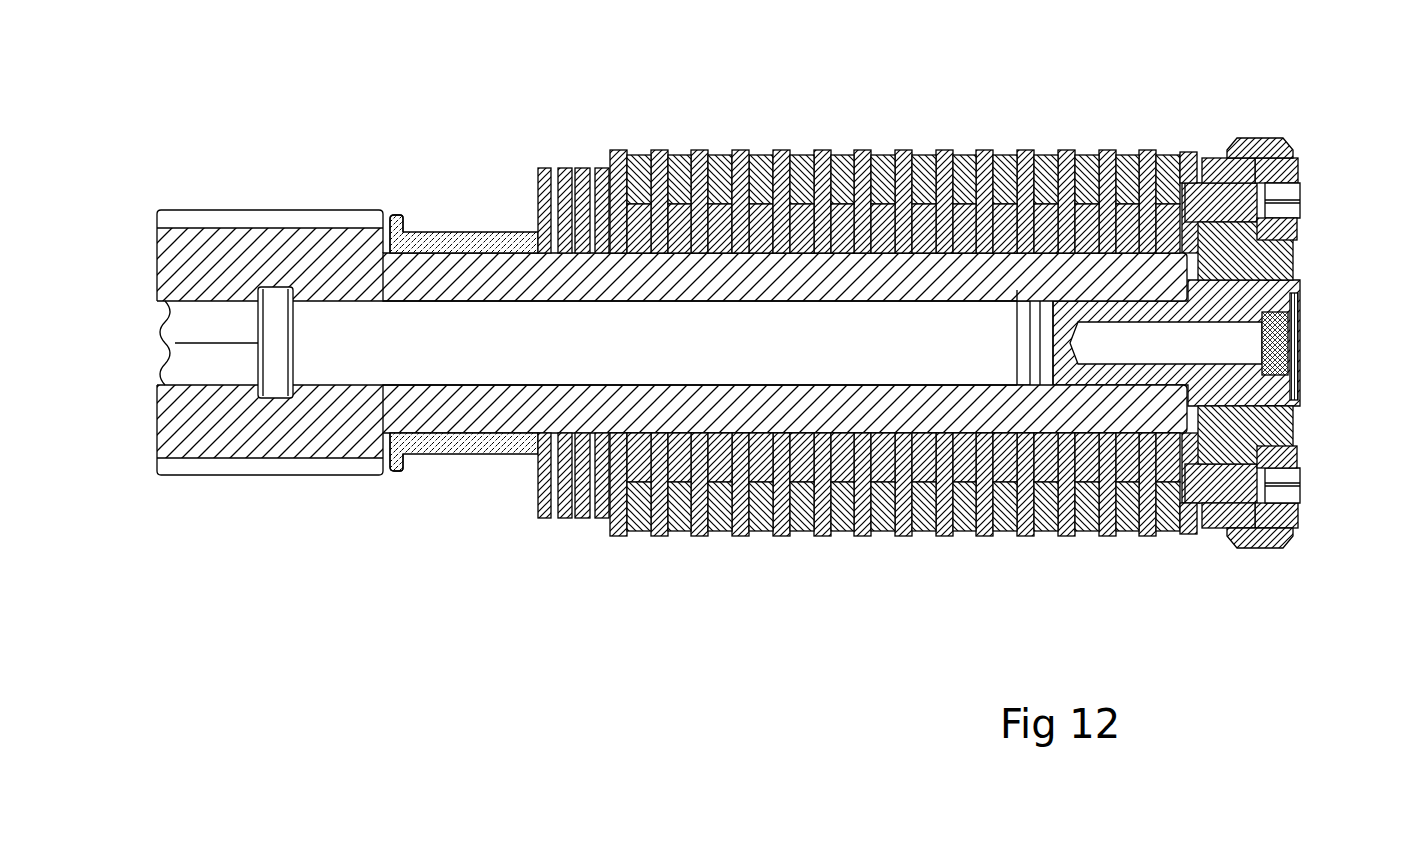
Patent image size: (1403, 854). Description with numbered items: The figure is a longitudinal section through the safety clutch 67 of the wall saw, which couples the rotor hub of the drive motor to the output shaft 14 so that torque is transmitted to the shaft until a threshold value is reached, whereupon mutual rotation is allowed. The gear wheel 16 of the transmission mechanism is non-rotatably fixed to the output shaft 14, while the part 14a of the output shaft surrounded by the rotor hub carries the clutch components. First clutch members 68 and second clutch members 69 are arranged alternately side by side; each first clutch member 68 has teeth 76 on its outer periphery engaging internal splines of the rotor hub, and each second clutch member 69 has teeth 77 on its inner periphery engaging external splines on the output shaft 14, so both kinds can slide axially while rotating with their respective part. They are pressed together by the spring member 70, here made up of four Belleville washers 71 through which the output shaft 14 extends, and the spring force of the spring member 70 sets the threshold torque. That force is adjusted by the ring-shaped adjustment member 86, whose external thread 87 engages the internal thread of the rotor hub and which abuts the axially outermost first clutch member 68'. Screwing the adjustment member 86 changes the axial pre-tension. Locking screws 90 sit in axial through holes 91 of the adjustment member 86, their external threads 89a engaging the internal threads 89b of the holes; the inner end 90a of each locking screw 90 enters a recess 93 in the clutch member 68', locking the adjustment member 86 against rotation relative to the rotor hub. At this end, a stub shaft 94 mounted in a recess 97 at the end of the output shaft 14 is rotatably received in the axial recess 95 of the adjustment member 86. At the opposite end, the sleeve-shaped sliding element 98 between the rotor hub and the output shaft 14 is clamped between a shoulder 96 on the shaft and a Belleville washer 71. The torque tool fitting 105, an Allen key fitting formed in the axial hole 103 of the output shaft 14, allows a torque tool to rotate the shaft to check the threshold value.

The output shaft 14 is at (455, 268).
The part of the output shaft 14a is at (725, 302).
The gear wheel 16 is at (246, 212).
The safety clutch 67 is at (921, 283).
The first clutch member 68 is at (786, 169).
The axially outermost first clutch member 68' is at (1206, 297).
The second clutch member 69 is at (802, 163).
The spring member 70 is at (574, 156).
The Belleville washer 71 is at (582, 519).
The teeth 76 is at (740, 150).
The teeth 77 is at (797, 256).
The adjustment member 86 is at (1283, 437).
The external thread 87 is at (1265, 138).
The external thread 89a is at (1293, 201).
The internal thread 89b is at (1227, 177).
The locking screw 90 is at (1288, 173).
The inner end of locking screw 90a is at (1188, 197).
The axial through hole 91 is at (1250, 230).
The recess 93 is at (1183, 203).
The stub shaft 94 is at (1278, 290).
The axial recess 95 is at (1258, 410).
The shoulder 96 is at (392, 230).
The recess 97 is at (1030, 347).
The sliding element 98 is at (455, 446).
The axial hole 103 is at (200, 322).
The torque tool fitting 105 is at (195, 377).